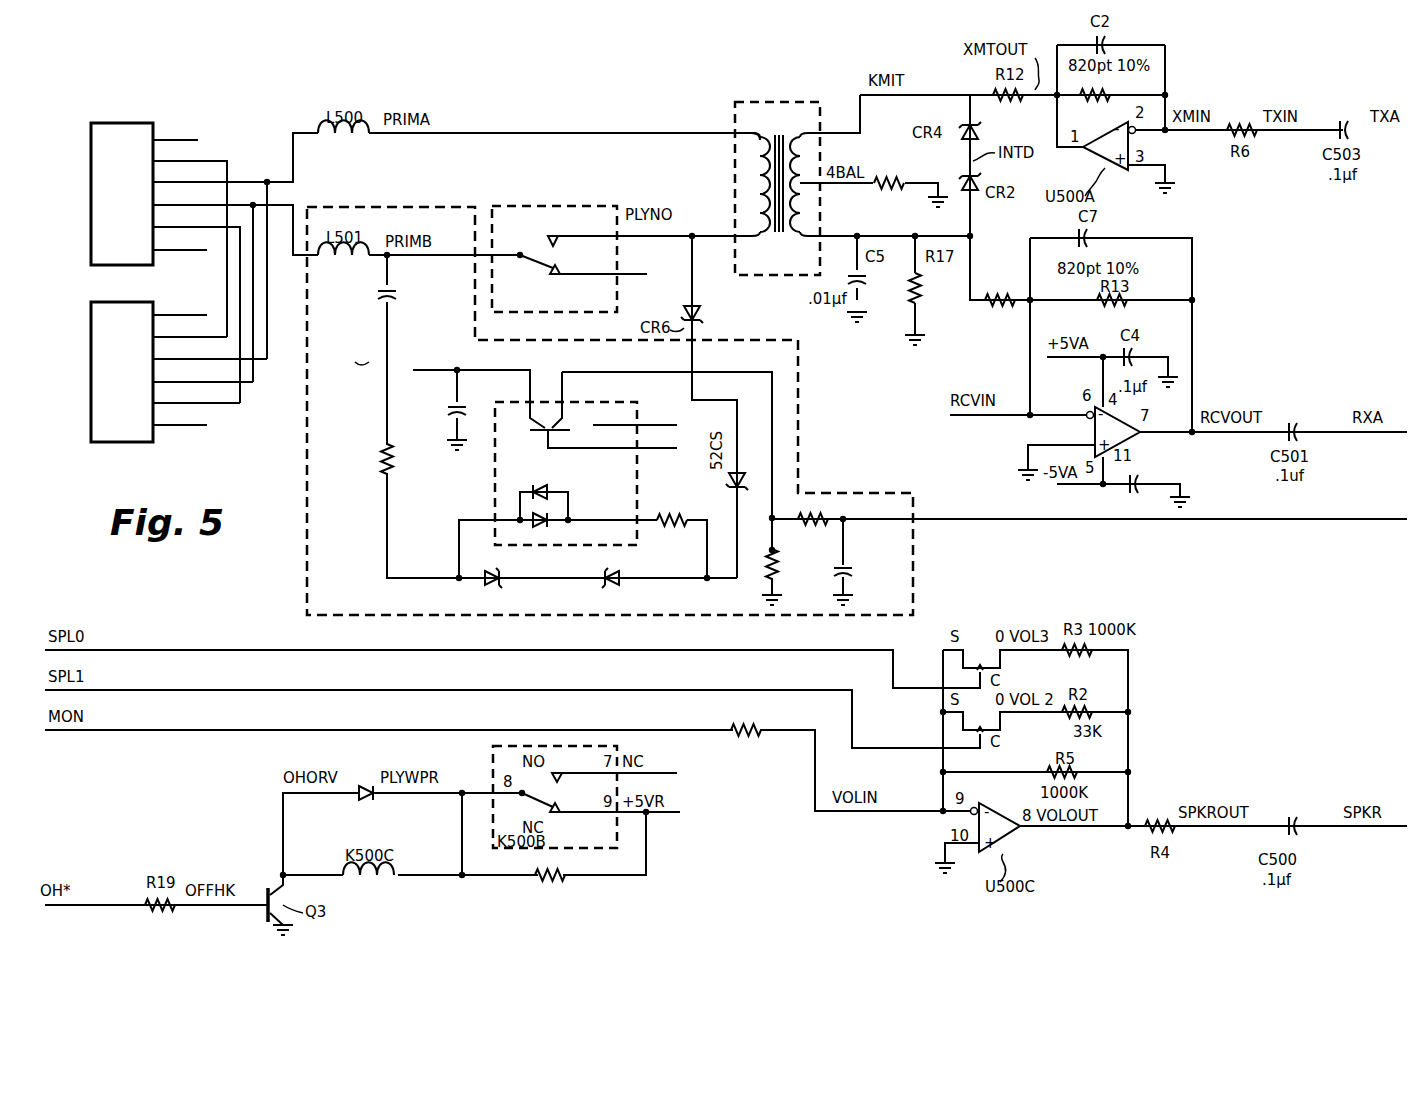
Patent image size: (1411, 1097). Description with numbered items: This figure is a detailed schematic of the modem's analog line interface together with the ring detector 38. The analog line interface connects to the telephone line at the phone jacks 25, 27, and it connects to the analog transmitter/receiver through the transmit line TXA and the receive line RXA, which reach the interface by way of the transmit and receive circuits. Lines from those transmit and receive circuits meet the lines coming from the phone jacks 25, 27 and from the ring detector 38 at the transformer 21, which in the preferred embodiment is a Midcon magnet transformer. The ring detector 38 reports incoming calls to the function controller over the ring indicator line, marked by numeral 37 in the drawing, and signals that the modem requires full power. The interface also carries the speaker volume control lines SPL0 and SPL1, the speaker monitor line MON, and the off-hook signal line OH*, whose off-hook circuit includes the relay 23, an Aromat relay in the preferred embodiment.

The transformer 21 is at (782, 102).
The relay 23 is at (550, 208).
The phone jack 25 is at (132, 204).
The phone jack 27 is at (132, 384).
The R1 signal line 37 is at (1300, 522).
The ring detector 38 is at (307, 545).